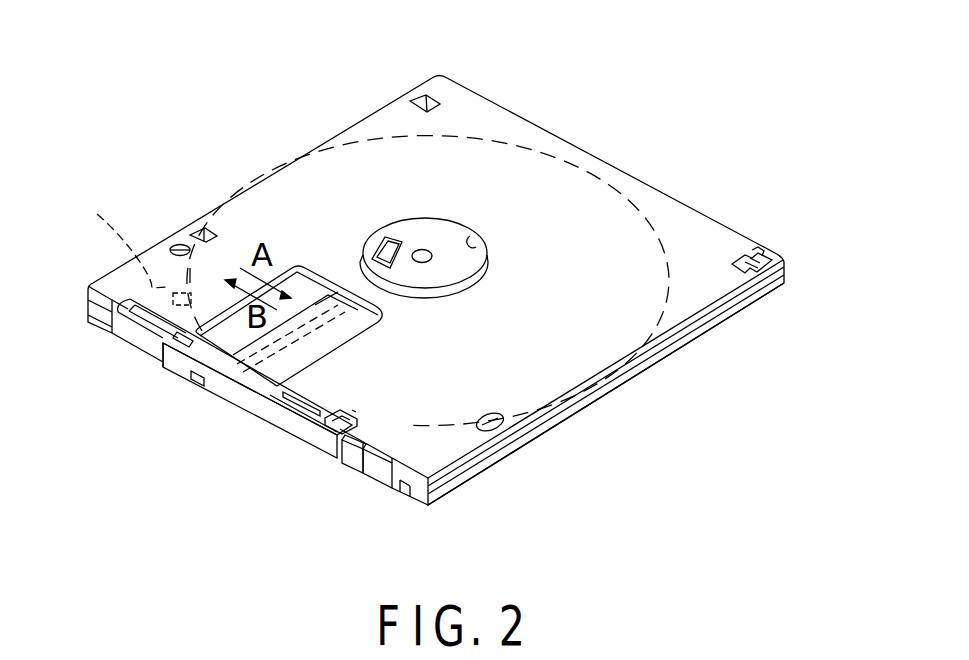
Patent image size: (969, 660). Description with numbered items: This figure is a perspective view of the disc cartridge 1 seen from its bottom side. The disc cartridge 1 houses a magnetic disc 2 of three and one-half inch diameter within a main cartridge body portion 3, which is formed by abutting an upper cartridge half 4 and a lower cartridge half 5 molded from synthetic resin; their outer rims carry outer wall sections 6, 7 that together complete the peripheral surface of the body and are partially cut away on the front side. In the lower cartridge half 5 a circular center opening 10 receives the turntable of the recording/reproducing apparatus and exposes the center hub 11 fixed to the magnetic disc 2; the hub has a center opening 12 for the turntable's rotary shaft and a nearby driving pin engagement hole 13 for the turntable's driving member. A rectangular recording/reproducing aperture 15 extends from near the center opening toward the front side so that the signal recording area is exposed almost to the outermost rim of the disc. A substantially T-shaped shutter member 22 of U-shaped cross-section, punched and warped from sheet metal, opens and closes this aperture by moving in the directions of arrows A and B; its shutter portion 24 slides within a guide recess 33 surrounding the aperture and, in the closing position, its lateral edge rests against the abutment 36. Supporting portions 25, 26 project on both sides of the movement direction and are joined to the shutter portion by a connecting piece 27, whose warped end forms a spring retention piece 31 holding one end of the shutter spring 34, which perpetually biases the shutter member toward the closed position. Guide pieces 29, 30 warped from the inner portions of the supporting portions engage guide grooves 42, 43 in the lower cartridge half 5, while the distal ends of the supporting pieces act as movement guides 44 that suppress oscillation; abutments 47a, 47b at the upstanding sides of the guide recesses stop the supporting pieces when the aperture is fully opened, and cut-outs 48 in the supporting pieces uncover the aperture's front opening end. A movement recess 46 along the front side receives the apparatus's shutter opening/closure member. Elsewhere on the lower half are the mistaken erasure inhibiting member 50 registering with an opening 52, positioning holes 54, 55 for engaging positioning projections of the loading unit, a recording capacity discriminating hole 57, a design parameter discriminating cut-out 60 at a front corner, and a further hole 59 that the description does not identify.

The disc cartridge 1 is at (590, 500).
The magnetic disc 2 is at (582, 167).
The main cartridge body portion 3 is at (610, 382).
The upper cartridge half 4 is at (727, 387).
The lower cartridge half 5 is at (657, 346).
The outer wall section 6 is at (712, 328).
The outer wall section 7 is at (727, 308).
The circular center opening 10 is at (473, 237).
The center hub 11 is at (415, 237).
The center opening 12 is at (432, 257).
The driving pin engagement hole 13 is at (383, 237).
The recording/reproducing aperture 15 is at (315, 305).
The shutter member 22 is at (209, 376).
The shutter portion 24 is at (372, 306).
The supporting portion 25 is at (175, 365).
The supporting portion 26 is at (327, 450).
The connecting piece 27 is at (232, 404).
The guide piece 29 is at (195, 332).
The guide piece 30 is at (352, 410).
The spring retention piece 31 is at (196, 384).
The guide recess 33 is at (298, 266).
The shutter spring 34 is at (122, 245).
The abutment 36 is at (353, 345).
The guide groove 42 is at (137, 324).
The guide groove 43 is at (296, 412).
The movement guide 44 is at (341, 412).
The movement recess 46 is at (350, 460).
The abutment 47a is at (112, 335).
The abutment 47b is at (94, 281).
The cut-out 48 is at (310, 438).
The mistaken erasure inhibiting member 50 is at (763, 253).
The opening 52 is at (743, 260).
The positioning hole 54 is at (173, 245).
The positioning hole 55 is at (506, 433).
The recording capacity discriminating hole 57 is at (201, 229).
The detection hole 59 is at (432, 95).
The design parameter discriminating cut-out 60 is at (405, 492).